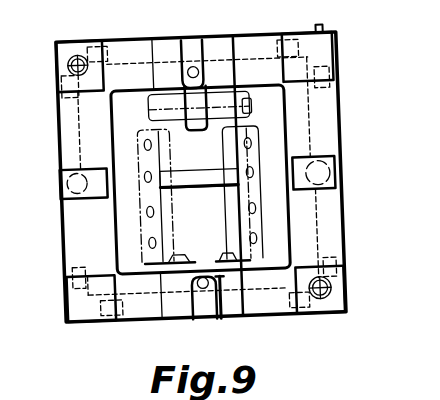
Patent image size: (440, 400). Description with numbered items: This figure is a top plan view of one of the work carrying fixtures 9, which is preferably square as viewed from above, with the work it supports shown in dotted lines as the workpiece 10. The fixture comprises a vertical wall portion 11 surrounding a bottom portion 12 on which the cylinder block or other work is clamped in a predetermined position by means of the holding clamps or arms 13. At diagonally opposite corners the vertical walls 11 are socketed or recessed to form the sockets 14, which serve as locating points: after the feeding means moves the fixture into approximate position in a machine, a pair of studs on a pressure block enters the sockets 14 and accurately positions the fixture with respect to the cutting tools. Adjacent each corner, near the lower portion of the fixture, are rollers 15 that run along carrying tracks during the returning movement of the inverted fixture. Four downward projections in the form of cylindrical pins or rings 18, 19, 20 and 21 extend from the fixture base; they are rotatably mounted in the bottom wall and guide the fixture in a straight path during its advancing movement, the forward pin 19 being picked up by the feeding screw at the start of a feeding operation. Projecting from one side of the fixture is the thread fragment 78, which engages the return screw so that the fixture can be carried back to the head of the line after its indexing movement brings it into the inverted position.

The work carrying fixture 9 is at (370, 80).
The workpiece plate 10 is at (254, 129).
The vertical wall portion 11 is at (253, 36).
The bottom portion 12 is at (271, 230).
The holding clamps or arms 13 is at (195, 45).
The sockets 14 is at (83, 51).
The rollers 15 is at (65, 92).
The cylindrical pin or ring 18 is at (64, 191).
The cylindrical pin or ring 19 is at (337, 165).
The cylindrical pin or ring 20 is at (202, 60).
The cylindrical pin or ring 21 is at (217, 319).
The thread fragment 78 is at (330, 32).